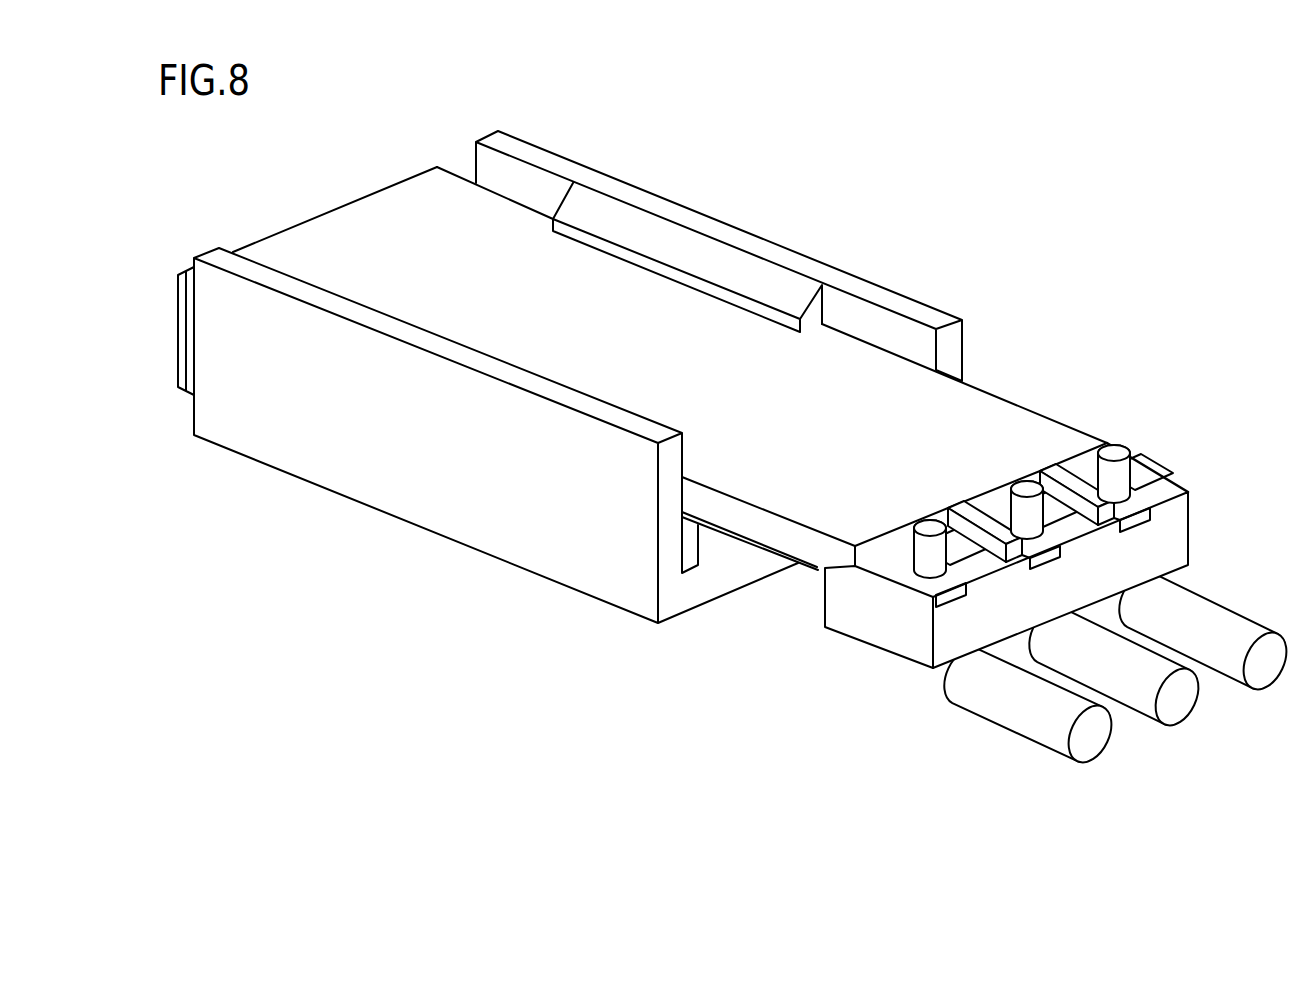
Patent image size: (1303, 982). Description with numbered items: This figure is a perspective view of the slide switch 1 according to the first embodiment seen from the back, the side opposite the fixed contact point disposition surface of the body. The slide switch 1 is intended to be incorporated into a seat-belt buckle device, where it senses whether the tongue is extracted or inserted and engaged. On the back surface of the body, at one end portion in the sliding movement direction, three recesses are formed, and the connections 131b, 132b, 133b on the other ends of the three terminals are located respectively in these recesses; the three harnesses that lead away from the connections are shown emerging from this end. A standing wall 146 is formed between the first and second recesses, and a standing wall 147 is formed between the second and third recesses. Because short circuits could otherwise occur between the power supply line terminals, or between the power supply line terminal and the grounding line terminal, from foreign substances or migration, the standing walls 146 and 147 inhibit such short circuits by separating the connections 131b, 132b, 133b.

The slide switch 1 is at (1158, 315).
The connection 131b is at (902, 566).
The connection 132b is at (1060, 532).
The connection 133b is at (1148, 492).
The standing wall 146 is at (968, 522).
The standing wall 147 is at (1080, 497).